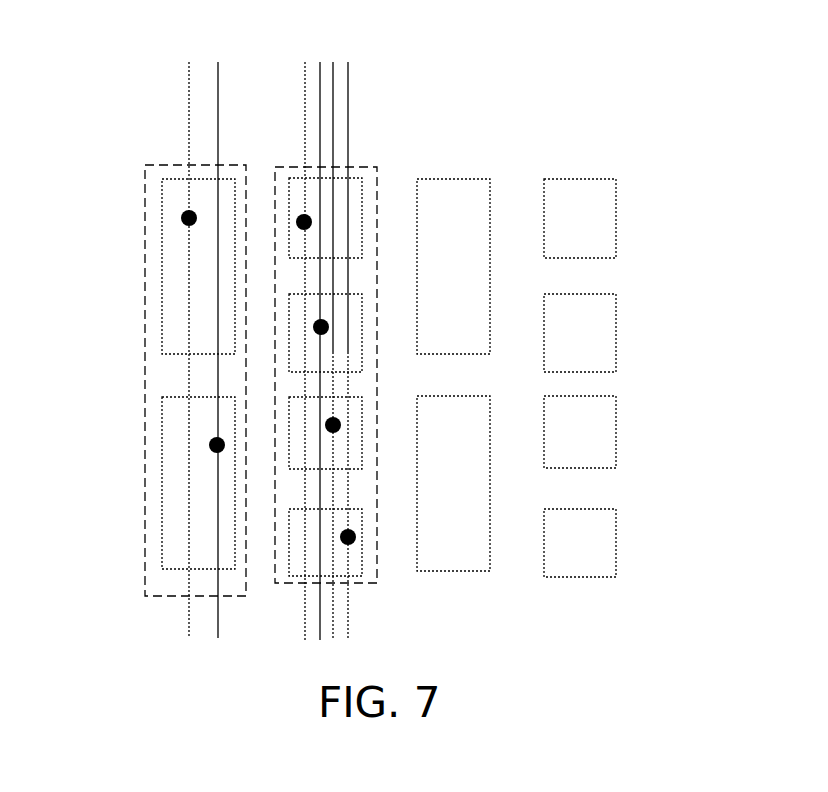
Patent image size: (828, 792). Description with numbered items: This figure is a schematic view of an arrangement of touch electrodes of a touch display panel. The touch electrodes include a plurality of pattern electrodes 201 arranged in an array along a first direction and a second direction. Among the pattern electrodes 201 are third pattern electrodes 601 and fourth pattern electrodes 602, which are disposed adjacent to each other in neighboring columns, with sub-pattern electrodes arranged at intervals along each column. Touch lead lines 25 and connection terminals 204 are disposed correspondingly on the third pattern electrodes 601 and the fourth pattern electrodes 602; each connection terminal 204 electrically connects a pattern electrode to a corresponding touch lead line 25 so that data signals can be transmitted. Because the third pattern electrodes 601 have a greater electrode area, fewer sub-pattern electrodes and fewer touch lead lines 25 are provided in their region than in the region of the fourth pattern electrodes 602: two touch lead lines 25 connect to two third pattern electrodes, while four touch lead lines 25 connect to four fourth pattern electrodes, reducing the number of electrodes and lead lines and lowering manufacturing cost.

The third pattern electrodes 601 is at (145, 228).
The fourth pattern electrodes 602 is at (360, 167).
The touch lead lines 25 is at (348, 83).
The connection terminals 204 is at (187, 211).
The pattern electrodes 201 is at (606, 198).